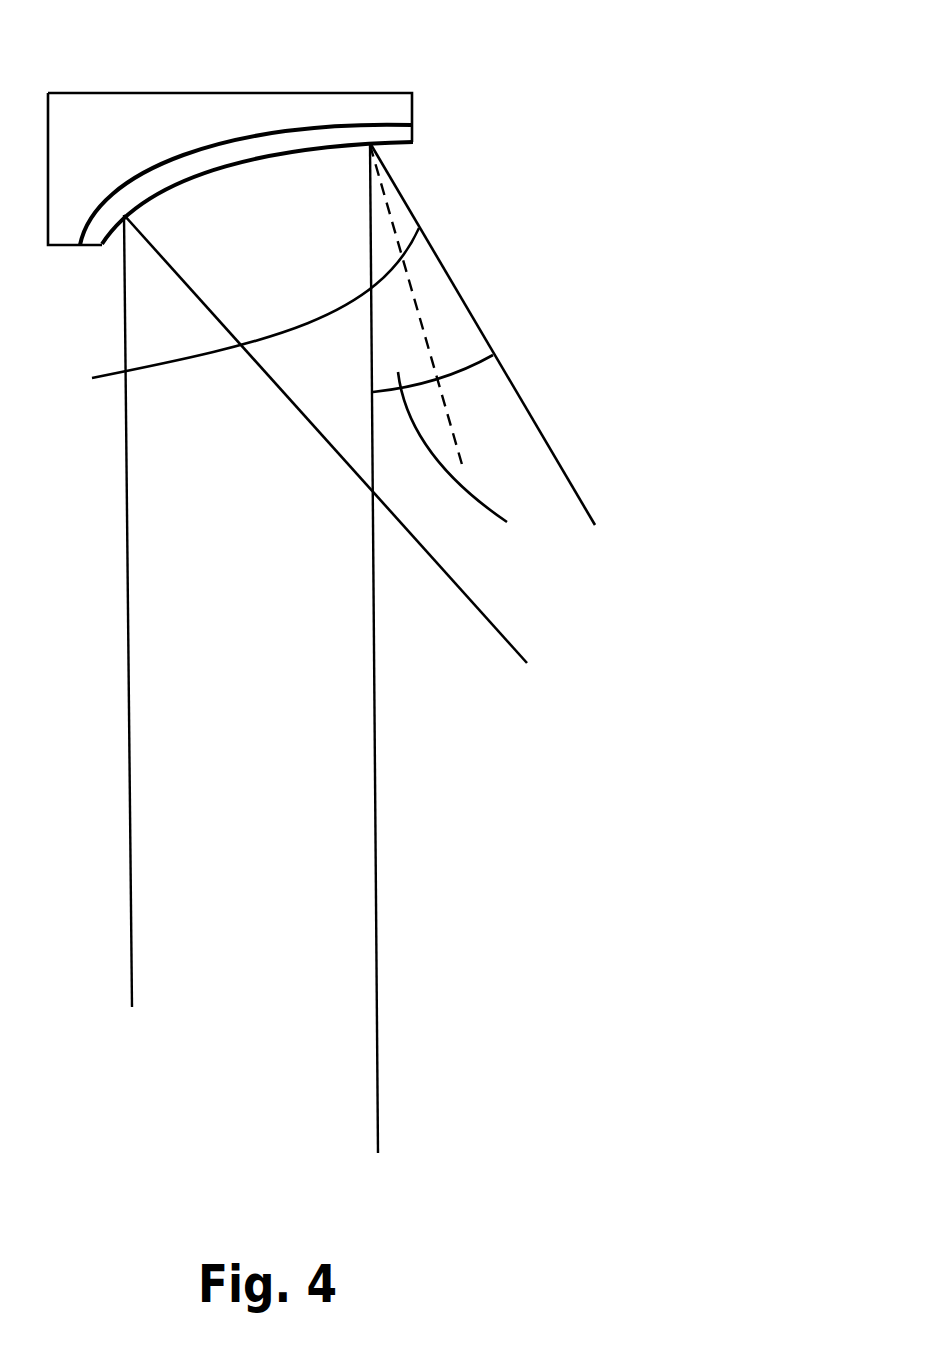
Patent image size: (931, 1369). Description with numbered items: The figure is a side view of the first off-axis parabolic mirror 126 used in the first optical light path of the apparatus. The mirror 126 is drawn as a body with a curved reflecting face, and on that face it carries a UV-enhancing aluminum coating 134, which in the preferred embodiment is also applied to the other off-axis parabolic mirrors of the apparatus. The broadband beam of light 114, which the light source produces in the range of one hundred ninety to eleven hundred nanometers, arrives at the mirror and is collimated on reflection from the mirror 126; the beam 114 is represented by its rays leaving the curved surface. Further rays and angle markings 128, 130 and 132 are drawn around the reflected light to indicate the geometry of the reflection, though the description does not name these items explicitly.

The broadband beam of light 114 is at (216, 318).
The first off-axis parabolic mirror 126 is at (360, 92).
The light ray 128 is at (419, 322).
The angle 130 is at (453, 358).
The angle 132 is at (475, 455).
The UV-enhancing aluminum coating 134 is at (415, 137).